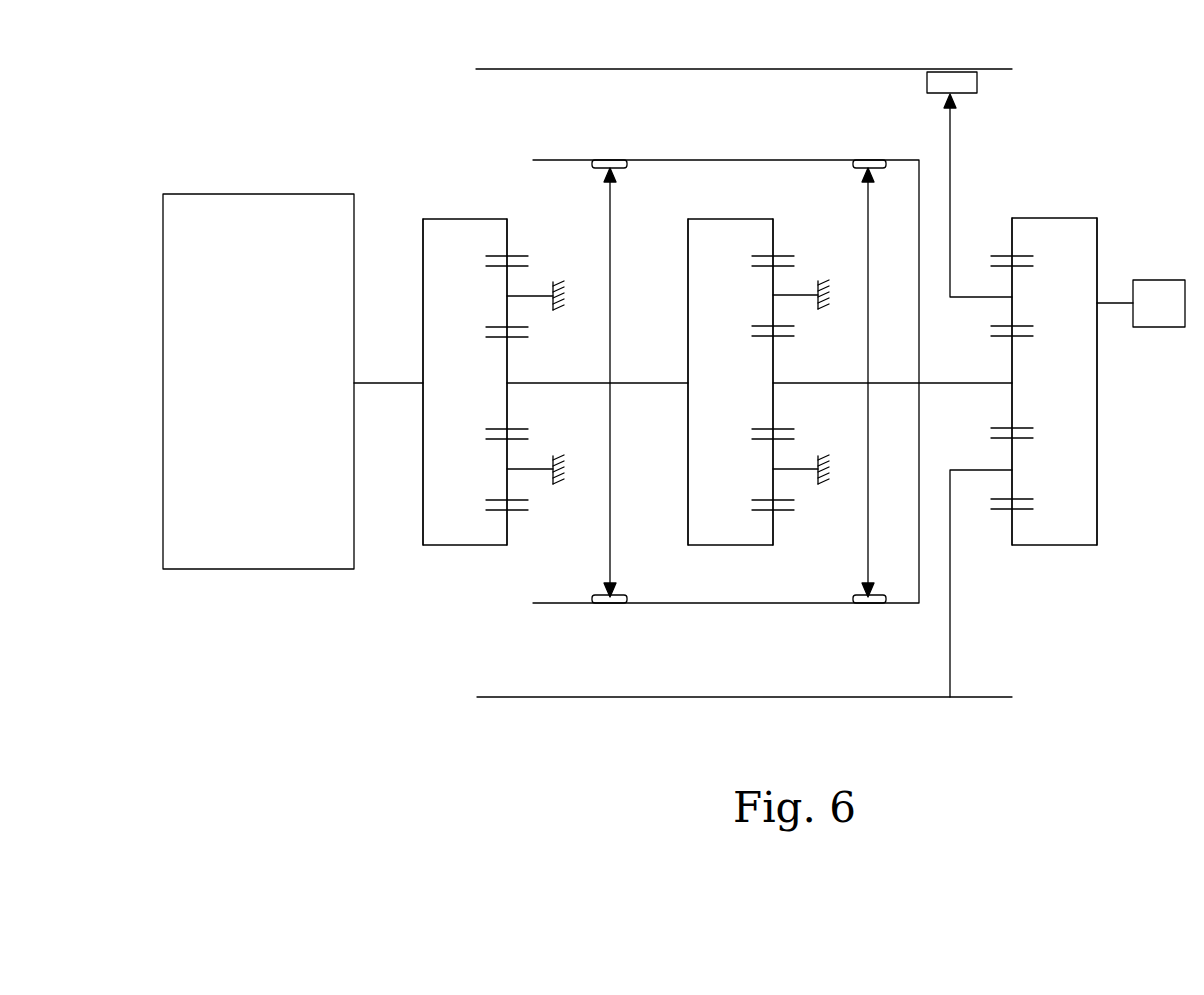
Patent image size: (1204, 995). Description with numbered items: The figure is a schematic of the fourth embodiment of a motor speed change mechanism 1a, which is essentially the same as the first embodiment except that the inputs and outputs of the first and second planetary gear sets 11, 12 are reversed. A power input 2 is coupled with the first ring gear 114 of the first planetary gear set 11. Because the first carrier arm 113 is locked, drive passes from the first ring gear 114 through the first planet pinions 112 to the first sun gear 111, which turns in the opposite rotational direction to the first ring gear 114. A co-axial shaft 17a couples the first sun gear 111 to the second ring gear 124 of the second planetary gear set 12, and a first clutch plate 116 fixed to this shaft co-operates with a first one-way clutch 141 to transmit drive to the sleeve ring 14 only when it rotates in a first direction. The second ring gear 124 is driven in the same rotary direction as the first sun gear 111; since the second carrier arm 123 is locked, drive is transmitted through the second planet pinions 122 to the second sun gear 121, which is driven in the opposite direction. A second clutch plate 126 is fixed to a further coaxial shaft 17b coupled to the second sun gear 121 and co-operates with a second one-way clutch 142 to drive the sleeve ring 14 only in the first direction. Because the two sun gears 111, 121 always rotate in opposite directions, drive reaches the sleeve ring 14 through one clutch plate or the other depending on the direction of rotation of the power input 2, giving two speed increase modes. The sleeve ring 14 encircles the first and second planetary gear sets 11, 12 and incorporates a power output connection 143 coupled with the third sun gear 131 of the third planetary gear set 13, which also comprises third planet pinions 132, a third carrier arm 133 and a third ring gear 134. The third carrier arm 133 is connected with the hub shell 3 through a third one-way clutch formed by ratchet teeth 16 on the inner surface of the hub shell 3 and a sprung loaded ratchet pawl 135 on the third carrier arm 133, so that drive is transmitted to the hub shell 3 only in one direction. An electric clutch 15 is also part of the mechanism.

The power input 2 is at (222, 569).
The speed change mechanism 1a is at (437, 628).
The hub shell 3 is at (588, 697).
The first planetary gear set 11 is at (470, 555).
The second planetary gear set 12 is at (678, 530).
The third planetary gear set 13 is at (1045, 552).
The sleeve ring 14 is at (570, 605).
The electric clutch 15 is at (1157, 280).
The ratchet teeth 16 is at (975, 68).
The co-axial shaft 17a is at (640, 383).
The further coaxial shaft 17b is at (793, 383).
The first sun gear 111 is at (507, 415).
The first planet pinions 112 is at (507, 293).
The first carrier arm 113 is at (553, 290).
The first ring gear 114 is at (410, 470).
The first clutch plate 116 is at (612, 228).
The second sun gear 121 is at (775, 413).
The second planet pinions 122 is at (773, 293).
The second carrier arm 123 is at (818, 290).
The second ring gear 124 is at (680, 470).
The second clutch plate 126 is at (866, 188).
The third sun gear 131 is at (1012, 415).
The third planet pinions 132 is at (1012, 276).
The third carrier arm 133 is at (955, 300).
The third ring gear 134 is at (1097, 465).
The sprung loaded ratchet pawl 135 is at (955, 105).
The first one-way clutch 141 is at (595, 166).
The second one-way clutch 142 is at (856, 166).
The power output connection 143 is at (965, 386).